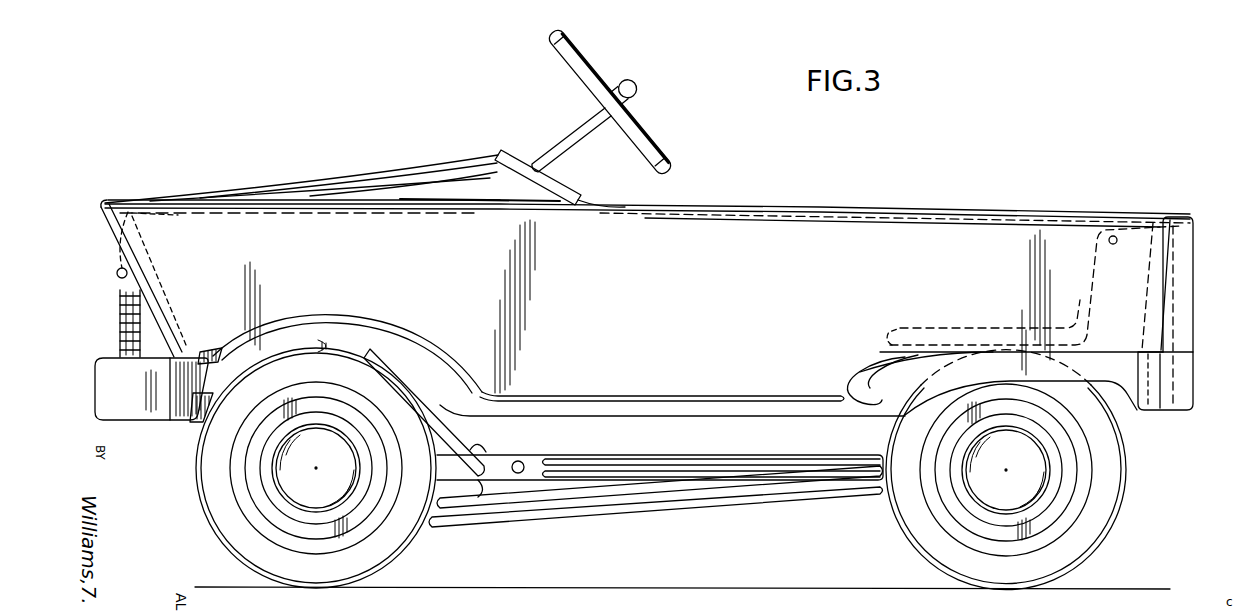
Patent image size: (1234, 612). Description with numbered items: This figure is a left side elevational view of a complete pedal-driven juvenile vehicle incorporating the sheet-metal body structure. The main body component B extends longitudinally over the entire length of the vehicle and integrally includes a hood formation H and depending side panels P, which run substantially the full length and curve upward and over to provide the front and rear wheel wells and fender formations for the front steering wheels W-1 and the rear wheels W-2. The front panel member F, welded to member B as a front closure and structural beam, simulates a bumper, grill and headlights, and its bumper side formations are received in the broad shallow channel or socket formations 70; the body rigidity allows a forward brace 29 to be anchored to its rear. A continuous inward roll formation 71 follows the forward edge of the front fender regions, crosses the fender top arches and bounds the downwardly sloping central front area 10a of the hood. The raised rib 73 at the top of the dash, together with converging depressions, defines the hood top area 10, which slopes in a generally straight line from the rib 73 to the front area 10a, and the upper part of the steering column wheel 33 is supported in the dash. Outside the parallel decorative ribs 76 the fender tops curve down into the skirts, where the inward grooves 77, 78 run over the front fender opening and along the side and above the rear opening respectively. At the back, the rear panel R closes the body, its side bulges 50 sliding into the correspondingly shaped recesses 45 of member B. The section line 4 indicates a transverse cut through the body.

The hood top area 10 is at (420, 168).
The downwardly sloping central front area of the hood 10a is at (127, 205).
The decorative ribs 76 is at (195, 200).
The raised rib 73 is at (503, 153).
The steering column wheel 33 is at (648, 124).
The inward roll formation 71 is at (118, 272).
The channel or socket formations 70 is at (175, 398).
The forward brace 29 is at (198, 420).
The inward rib or groove 77 is at (762, 377).
The inward rib or groove 78 is at (857, 370).
The outwardly offset portion of metal 45 is at (1133, 400).
The side bulge 50 is at (1193, 408).
The section line 4- 4 is at (300, 298).
The hood formation H is at (298, 176).
The main body component B is at (903, 197).
The front panel member F is at (112, 327).
The rear panel R is at (1191, 308).
The side panels P is at (680, 333).
The front steering wheels W-1 is at (397, 557).
The rear wheels W-2 is at (920, 552).